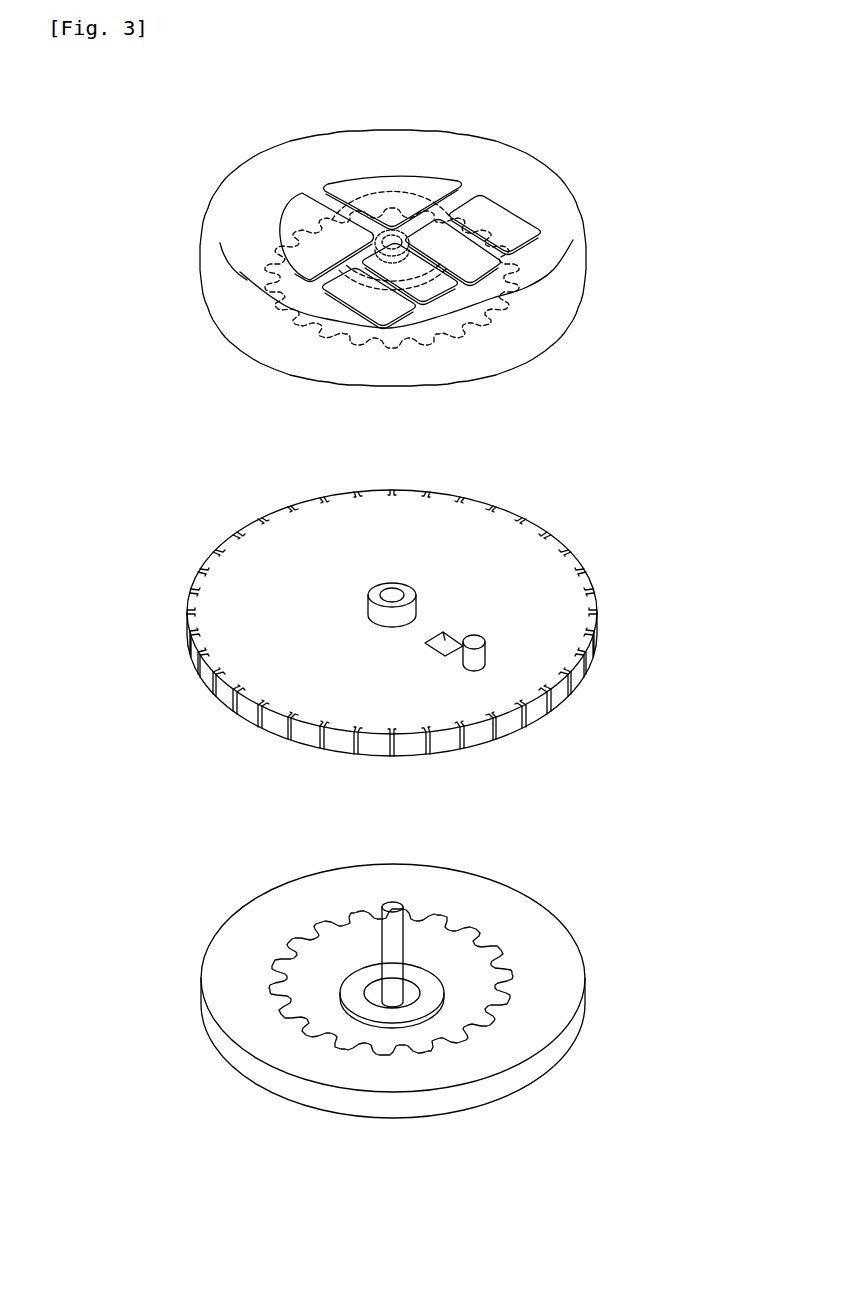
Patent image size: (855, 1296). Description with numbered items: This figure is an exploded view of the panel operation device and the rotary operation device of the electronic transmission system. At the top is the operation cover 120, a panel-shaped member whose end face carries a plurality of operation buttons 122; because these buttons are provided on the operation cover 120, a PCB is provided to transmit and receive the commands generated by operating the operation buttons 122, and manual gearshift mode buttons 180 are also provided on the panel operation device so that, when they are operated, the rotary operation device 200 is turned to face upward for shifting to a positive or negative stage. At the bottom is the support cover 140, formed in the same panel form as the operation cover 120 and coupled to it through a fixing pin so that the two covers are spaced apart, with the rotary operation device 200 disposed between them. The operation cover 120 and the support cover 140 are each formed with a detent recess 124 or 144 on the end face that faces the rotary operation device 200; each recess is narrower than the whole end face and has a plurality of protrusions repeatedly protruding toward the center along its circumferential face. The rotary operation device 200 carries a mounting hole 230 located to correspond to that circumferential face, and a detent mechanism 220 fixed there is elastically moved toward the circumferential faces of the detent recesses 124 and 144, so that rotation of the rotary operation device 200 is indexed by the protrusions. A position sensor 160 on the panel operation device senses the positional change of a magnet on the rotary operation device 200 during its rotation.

The operation cover 120 is at (570, 255).
The operation buttons 122 is at (505, 217).
The detent recess 124 is at (300, 323).
The element PCB is at (403, 193).
The manual gearshift mode buttons 180 is at (307, 207).
The rotary operation device 200 is at (468, 525).
The detent mechanism 220 is at (497, 636).
The mounting hole 230 is at (447, 638).
The support cover 140 is at (557, 998).
The detent recess 144 is at (492, 938).
The position sensor 160 is at (362, 982).